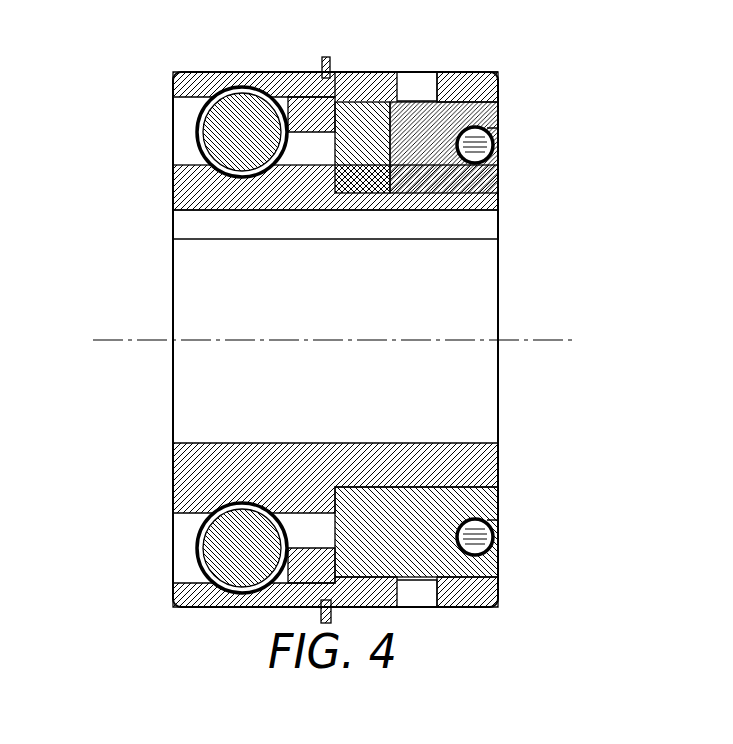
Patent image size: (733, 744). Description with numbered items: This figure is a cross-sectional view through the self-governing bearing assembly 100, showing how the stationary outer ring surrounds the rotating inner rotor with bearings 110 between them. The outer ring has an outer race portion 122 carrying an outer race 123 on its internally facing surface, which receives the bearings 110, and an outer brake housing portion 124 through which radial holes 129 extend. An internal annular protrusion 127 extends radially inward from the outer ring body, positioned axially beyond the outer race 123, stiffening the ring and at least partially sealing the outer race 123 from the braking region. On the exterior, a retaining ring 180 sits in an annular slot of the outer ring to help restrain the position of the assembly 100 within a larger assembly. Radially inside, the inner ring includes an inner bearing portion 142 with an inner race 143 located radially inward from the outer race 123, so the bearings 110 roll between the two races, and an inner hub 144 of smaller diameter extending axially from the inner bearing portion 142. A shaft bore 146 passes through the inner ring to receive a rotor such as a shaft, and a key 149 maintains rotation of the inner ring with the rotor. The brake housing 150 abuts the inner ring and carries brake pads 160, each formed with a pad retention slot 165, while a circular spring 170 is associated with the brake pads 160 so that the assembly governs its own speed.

The self-governing bearing assembly 100 is at (552, 39).
The bearings 110 is at (196, 118).
The outer race portion 122 is at (178, 74).
The outer race 123 is at (212, 74).
The outer brake housing portion 124 is at (463, 73).
The internal annular protrusion 127 is at (307, 117).
The radial holes 129 is at (415, 75).
The inner bearing portion 142 is at (185, 190).
The inner race 143 is at (230, 177).
The inner hub 144 is at (437, 203).
The shaft bore 146 is at (198, 323).
The key 149 is at (238, 228).
The brake housing 150 is at (363, 190).
The brake pads 160 is at (485, 115).
The pad retention slot 165 is at (492, 133).
The circular spring 170 is at (495, 152).
The retaining ring 180 is at (330, 62).